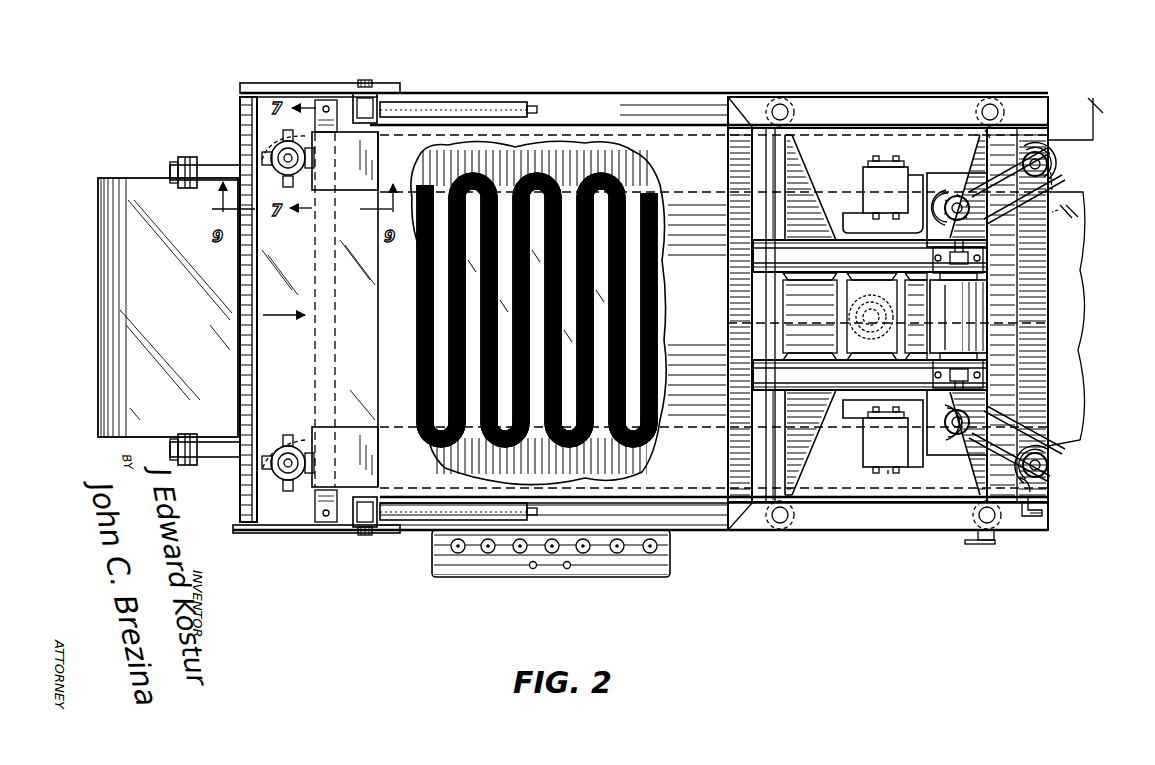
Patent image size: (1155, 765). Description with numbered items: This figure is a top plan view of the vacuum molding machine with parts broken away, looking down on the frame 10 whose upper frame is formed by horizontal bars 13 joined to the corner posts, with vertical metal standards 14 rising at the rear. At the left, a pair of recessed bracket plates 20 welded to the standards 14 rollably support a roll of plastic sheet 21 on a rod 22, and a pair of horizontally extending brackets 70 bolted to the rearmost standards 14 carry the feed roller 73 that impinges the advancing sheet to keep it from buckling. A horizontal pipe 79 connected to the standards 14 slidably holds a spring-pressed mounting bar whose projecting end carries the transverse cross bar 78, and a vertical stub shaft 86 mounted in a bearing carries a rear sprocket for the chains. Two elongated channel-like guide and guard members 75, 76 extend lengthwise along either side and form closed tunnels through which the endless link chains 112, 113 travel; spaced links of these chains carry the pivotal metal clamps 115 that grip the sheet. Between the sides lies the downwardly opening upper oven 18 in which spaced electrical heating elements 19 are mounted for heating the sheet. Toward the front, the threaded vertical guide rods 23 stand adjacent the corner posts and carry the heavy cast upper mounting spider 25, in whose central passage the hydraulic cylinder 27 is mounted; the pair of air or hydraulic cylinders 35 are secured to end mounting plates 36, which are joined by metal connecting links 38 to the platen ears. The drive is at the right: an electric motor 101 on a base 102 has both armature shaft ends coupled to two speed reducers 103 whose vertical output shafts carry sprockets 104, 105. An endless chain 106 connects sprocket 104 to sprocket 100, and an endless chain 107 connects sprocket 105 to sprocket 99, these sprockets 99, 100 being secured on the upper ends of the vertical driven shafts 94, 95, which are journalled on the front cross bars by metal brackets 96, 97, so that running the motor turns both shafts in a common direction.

The frame 10 is at (693, 92).
The horizontal bars 13 is at (863, 108).
The vertical metal standards 14 is at (351, 97).
The upper oven 18 is at (422, 143).
The electrical heating elements 19 is at (602, 177).
The recessed bracket plates 20 is at (213, 168).
The rolls of plastic film or plastic sheets 21 is at (110, 178).
The rod 22 is at (182, 155).
The guide rods 23 is at (779, 104).
The upper mounting frame or spider 25 is at (822, 220).
The hydraulic cylinder 27 is at (727, 326).
The hydraulic or air cylinders 35 is at (898, 199).
The end mounting plates 36 is at (889, 165).
The metal connecting links 38 is at (888, 474).
The horizontally extending brackets 70 is at (320, 84).
The feed roller 73 is at (242, 108).
The chain guide and guard member 75 is at (312, 492).
The chain guide and guard member 76 is at (380, 148).
The transverse horizontal cross bar 78 is at (320, 280).
The horizontal pipes 79 is at (497, 104).
The vertical stub shaft 86 is at (276, 152).
The driven shaft 94 is at (1022, 482).
The driven shaft 95 is at (1048, 176).
The metal bracket 96 is at (1032, 502).
The metal bracket 97 is at (1023, 142).
The sprocket 99 is at (1050, 470).
The sprocket 100 is at (1042, 166).
The electric motor 101 is at (967, 313).
The base 102 is at (970, 240).
The speed reducers 103 is at (1000, 215).
The sprocket 104 is at (947, 200).
The sprocket 105 is at (950, 440).
The endless chain 106 is at (987, 135).
The endless chain 107 is at (1020, 443).
The endless link chain 112 is at (282, 488).
The endless metal link chain 113 is at (258, 100).
The pivotal metal clamps 115 is at (293, 433).